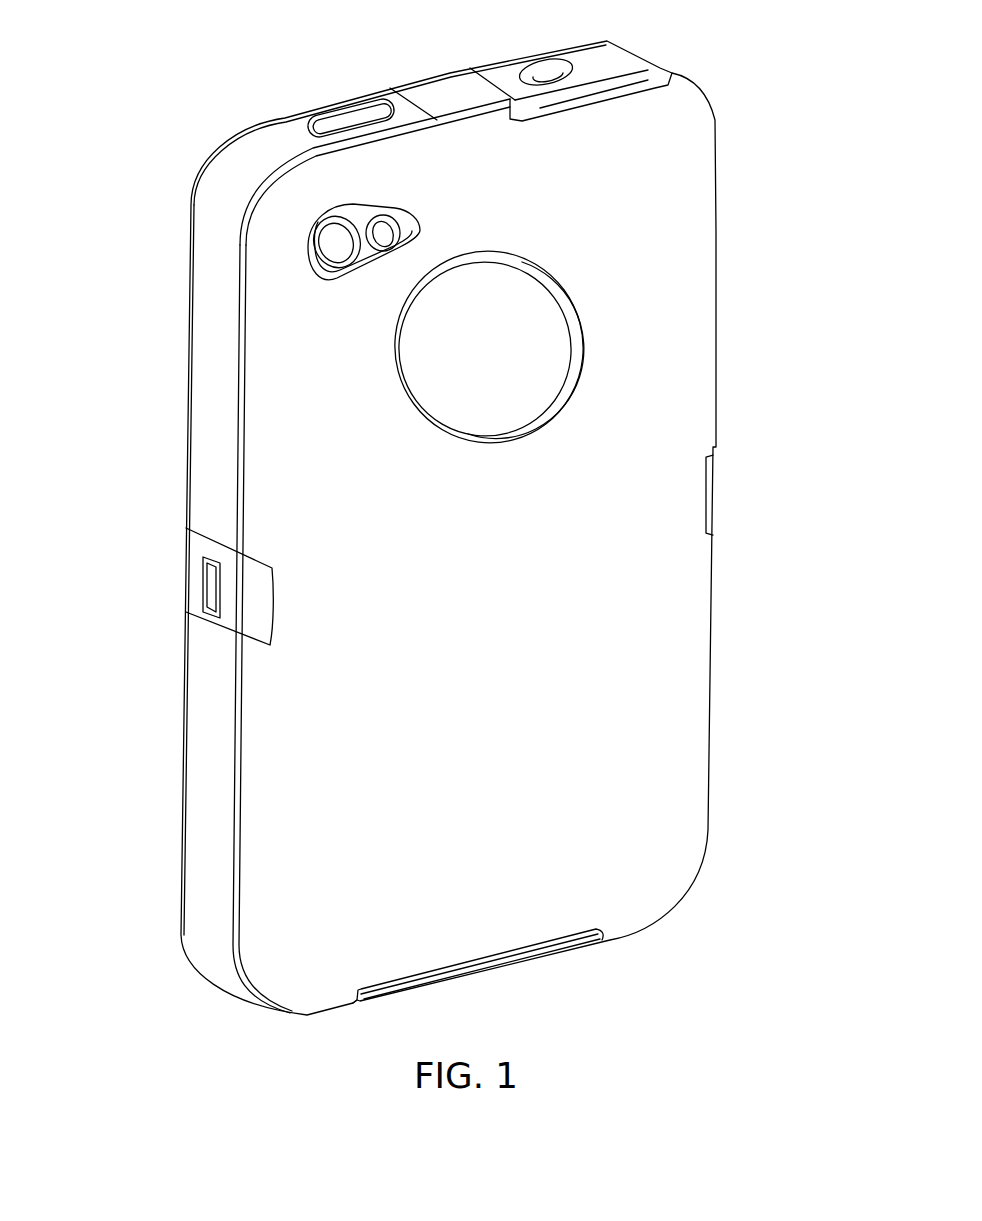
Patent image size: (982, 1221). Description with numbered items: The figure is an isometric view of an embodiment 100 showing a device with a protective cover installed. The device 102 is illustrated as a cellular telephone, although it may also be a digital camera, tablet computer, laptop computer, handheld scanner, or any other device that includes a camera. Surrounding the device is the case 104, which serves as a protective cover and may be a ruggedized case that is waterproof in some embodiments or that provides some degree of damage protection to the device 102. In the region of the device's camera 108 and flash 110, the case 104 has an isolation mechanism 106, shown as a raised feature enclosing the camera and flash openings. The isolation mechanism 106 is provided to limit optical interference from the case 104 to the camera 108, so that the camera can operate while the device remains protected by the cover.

The embodiment 100 is at (796, 888).
The device 102 is at (493, 355).
The case 104 is at (355, 868).
The isolation mechanism 106 is at (362, 275).
The camera 108 is at (333, 240).
The flash 110 is at (380, 232).